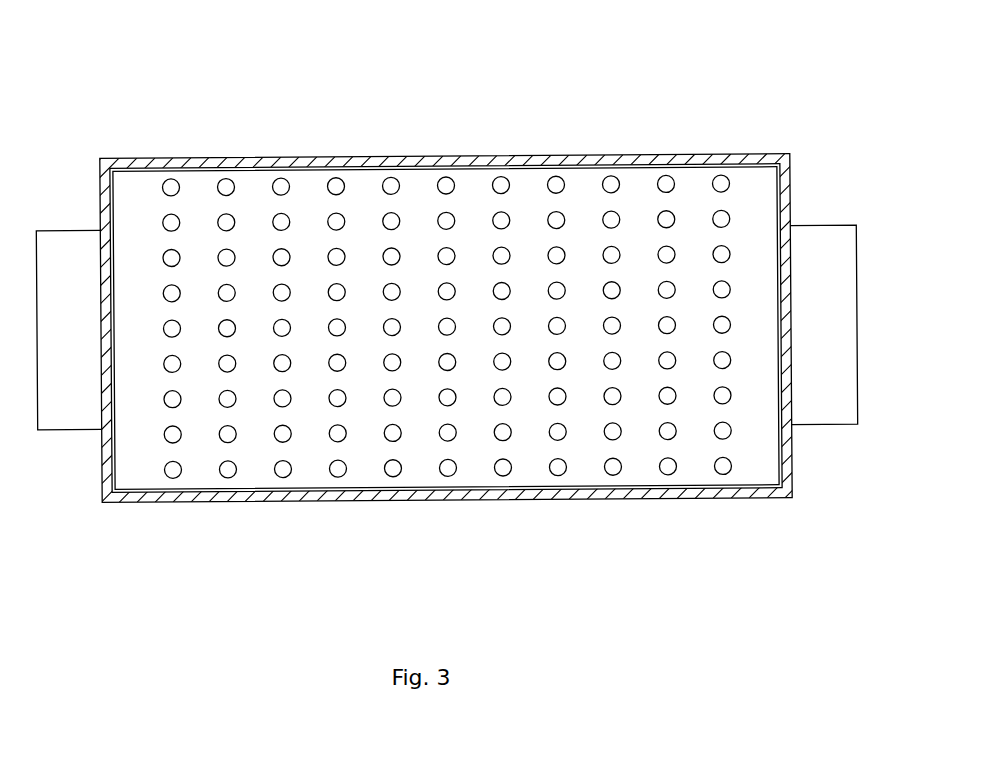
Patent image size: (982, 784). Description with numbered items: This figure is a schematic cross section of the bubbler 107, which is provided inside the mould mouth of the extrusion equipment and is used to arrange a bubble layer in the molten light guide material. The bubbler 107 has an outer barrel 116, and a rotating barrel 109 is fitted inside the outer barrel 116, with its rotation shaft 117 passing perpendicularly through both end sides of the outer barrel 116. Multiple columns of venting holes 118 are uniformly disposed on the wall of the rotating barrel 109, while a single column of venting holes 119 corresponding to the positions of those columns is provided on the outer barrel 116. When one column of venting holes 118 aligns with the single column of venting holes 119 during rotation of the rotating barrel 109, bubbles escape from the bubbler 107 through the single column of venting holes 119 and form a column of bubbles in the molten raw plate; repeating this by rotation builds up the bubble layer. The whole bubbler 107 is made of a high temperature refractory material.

The bubbler 107 is at (222, 155).
The outer barrel 116 is at (405, 158).
The single column of venting holes 119 is at (557, 162).
The venting holes 118 is at (618, 180).
The rotating barrel 109 is at (477, 253).
The rotation shaft 117 is at (75, 305).